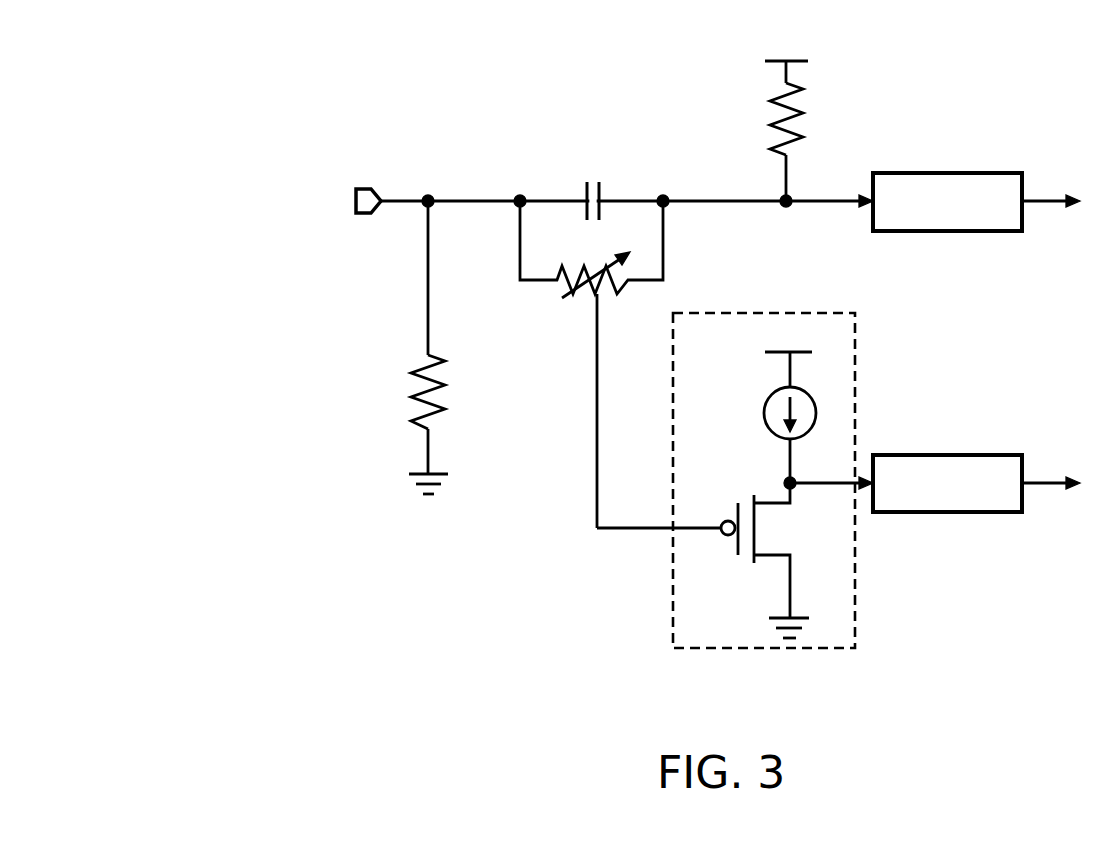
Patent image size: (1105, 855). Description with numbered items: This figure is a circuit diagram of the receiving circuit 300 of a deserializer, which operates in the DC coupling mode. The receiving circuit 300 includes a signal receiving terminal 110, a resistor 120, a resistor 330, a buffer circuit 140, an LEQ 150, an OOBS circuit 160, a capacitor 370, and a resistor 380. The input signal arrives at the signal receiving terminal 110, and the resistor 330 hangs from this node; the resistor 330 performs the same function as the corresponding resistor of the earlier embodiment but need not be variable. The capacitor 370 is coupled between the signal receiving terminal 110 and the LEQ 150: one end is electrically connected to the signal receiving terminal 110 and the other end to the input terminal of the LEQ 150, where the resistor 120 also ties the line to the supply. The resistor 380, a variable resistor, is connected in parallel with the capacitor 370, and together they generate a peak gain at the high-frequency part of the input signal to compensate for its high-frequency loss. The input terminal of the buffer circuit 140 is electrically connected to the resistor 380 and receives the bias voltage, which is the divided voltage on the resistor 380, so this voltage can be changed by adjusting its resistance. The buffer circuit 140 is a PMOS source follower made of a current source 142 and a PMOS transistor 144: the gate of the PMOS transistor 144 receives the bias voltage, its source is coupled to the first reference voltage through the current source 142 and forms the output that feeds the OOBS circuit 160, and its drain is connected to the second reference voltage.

The receiving circuit 300 is at (185, 107).
The signal receiving terminal 110 is at (430, 193).
The resistor 120 is at (769, 125).
The buffer circuit 140 is at (813, 313).
The current source 142 is at (764, 412).
The PMOS transistor 144 is at (729, 567).
The LEQ 150 is at (955, 173).
The OOBS circuit 160 is at (957, 455).
The resistor 330 is at (411, 373).
The capacitor 370 is at (582, 169).
The resistor 380 is at (562, 303).